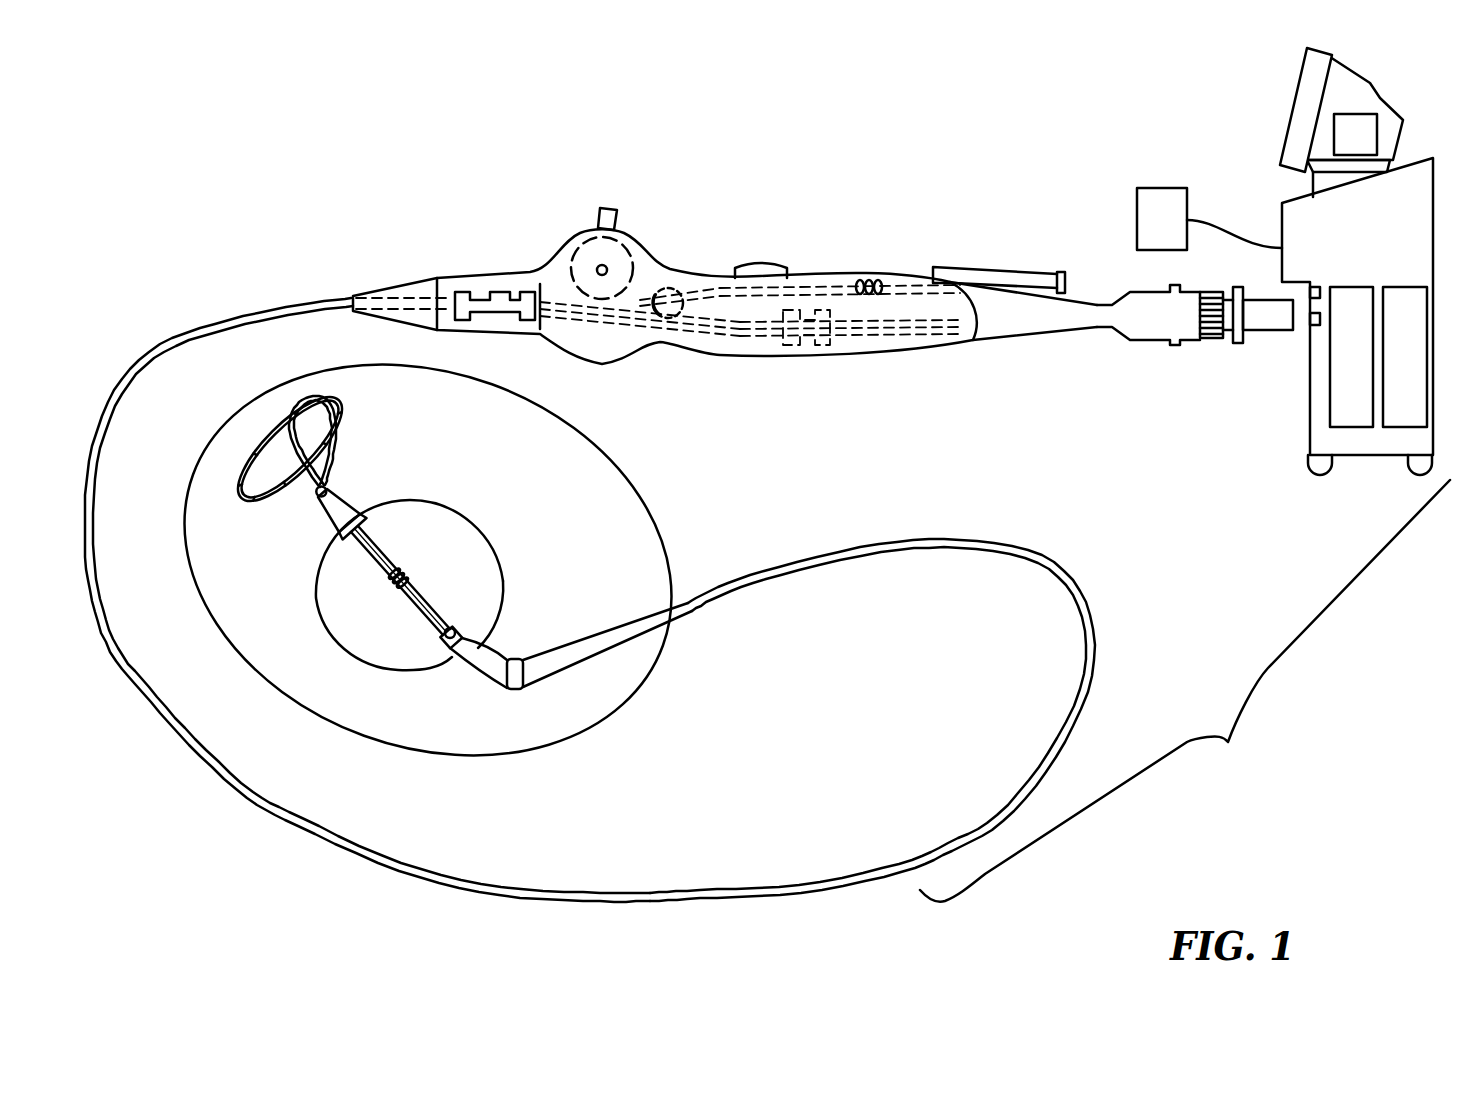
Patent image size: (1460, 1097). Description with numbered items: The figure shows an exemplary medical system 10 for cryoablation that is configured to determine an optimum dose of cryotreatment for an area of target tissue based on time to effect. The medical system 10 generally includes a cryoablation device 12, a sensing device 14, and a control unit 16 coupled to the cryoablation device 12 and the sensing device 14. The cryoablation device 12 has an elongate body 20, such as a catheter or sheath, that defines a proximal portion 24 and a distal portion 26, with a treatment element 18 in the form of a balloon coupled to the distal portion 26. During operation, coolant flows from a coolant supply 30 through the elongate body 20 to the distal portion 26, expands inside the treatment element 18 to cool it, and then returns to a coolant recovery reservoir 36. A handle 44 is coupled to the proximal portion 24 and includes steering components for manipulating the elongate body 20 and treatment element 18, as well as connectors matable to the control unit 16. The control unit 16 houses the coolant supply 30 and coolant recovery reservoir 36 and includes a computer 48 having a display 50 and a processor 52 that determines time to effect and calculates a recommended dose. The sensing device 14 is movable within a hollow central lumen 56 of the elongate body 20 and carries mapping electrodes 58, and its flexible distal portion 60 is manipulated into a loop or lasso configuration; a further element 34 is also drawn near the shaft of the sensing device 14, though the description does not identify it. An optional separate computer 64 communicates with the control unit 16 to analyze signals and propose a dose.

The medical system 10 is at (1185, 691).
The cryoablation device 12 is at (763, 231).
The sensing device 14 is at (289, 553).
The control unit 16 is at (1357, 316).
The treatment element 18 is at (477, 520).
The elongate body 20 is at (1013, 550).
The proximal portion 24 is at (178, 335).
The distal portion 26 is at (585, 658).
The coolant supply 30 is at (1365, 372).
The hemostasis valve 34 is at (410, 577).
The coolant recovery reservoir 36 is at (1419, 370).
The handle 44 is at (688, 283).
The computer 48 is at (1363, 100).
The display 50 is at (1292, 128).
The processor 52 is at (1370, 148).
The hollow central lumen 56 is at (343, 490).
The mapping electrode 58 is at (255, 507).
The distal portion of the sensing device 60 is at (305, 400).
The separate computer 64 is at (1176, 233).